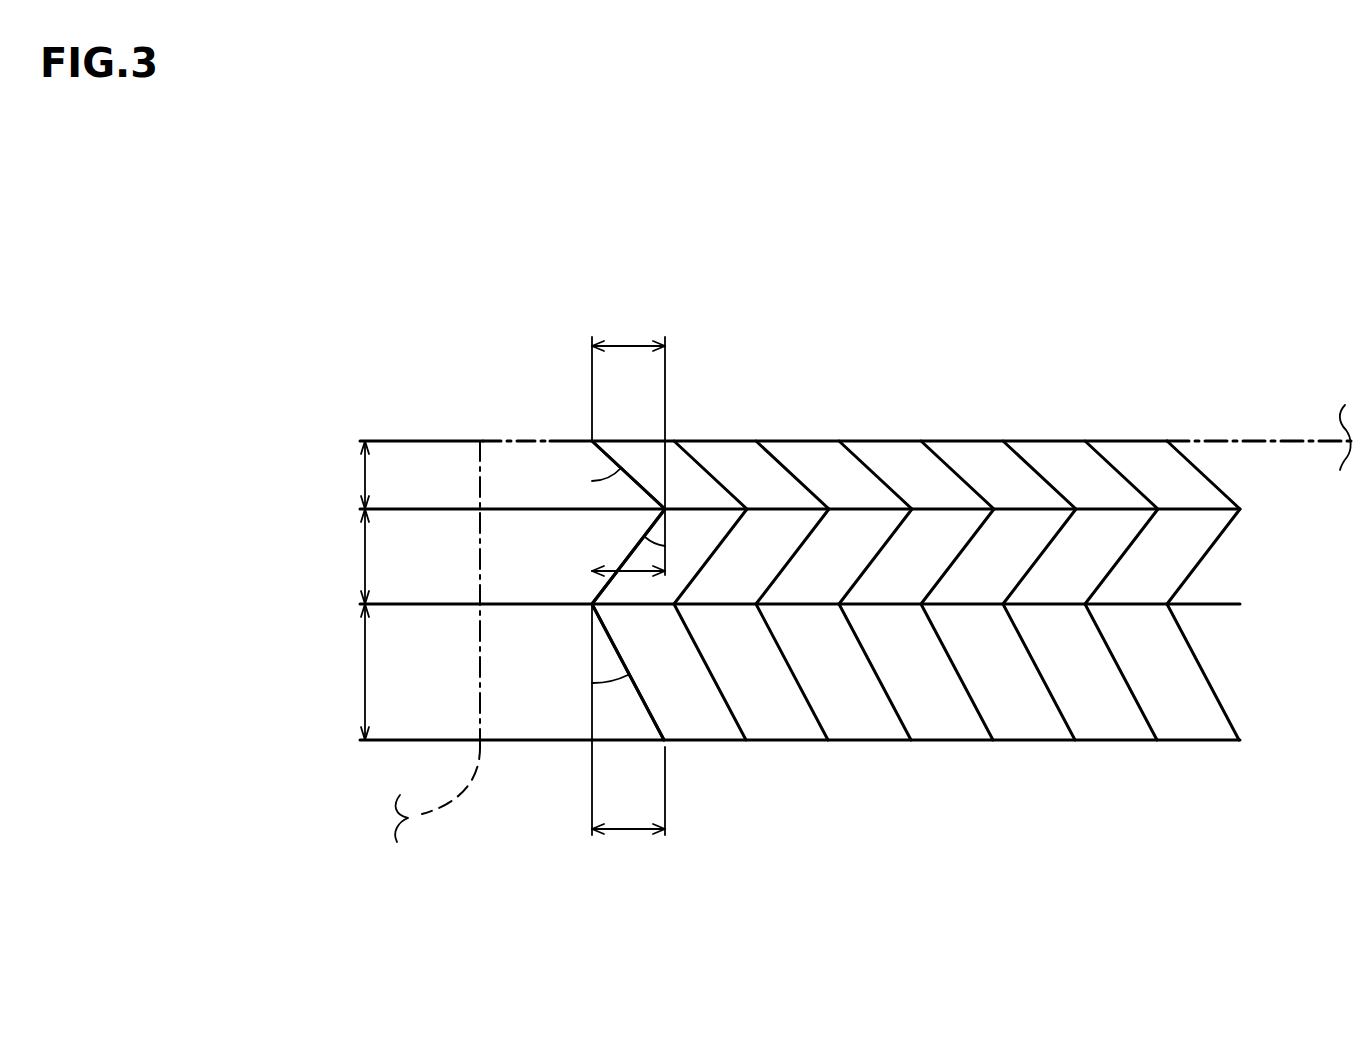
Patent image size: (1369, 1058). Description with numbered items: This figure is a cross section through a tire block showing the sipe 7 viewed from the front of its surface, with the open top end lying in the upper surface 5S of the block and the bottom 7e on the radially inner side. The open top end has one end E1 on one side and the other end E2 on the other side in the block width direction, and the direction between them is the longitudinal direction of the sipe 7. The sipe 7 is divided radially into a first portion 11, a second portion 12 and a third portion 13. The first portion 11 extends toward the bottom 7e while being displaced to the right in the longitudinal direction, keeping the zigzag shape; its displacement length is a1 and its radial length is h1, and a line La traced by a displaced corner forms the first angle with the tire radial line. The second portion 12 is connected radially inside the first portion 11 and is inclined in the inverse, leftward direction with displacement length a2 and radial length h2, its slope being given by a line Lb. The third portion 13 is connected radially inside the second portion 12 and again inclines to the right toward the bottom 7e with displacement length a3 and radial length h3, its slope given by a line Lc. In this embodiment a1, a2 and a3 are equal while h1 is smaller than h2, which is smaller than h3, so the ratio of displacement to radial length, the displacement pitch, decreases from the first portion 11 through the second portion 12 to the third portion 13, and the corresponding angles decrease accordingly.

The sipe 7 is at (1050, 473).
The bottom 7e is at (852, 740).
The first portion 11 is at (1275, 441).
The second portion 12 is at (1275, 509).
The third portion 13 is at (1275, 604).
The upper surface of the block 5S is at (497, 432).
The one end E1 is at (592, 441).
The other end E2 is at (1167, 441).
The line La is at (645, 490).
The line Lb is at (632, 551).
The line Lc is at (643, 700).
The displacement length of the first portion a1 is at (628, 443).
The displacement length of the second portion a2 is at (622, 562).
The displacement length of the third portion a3 is at (628, 736).
The length in the radial direction of the first portion h1 is at (347, 475).
The length in the radial direction of the second portion h2 is at (345, 556).
The length in the radial direction of the third portion h3 is at (345, 672).